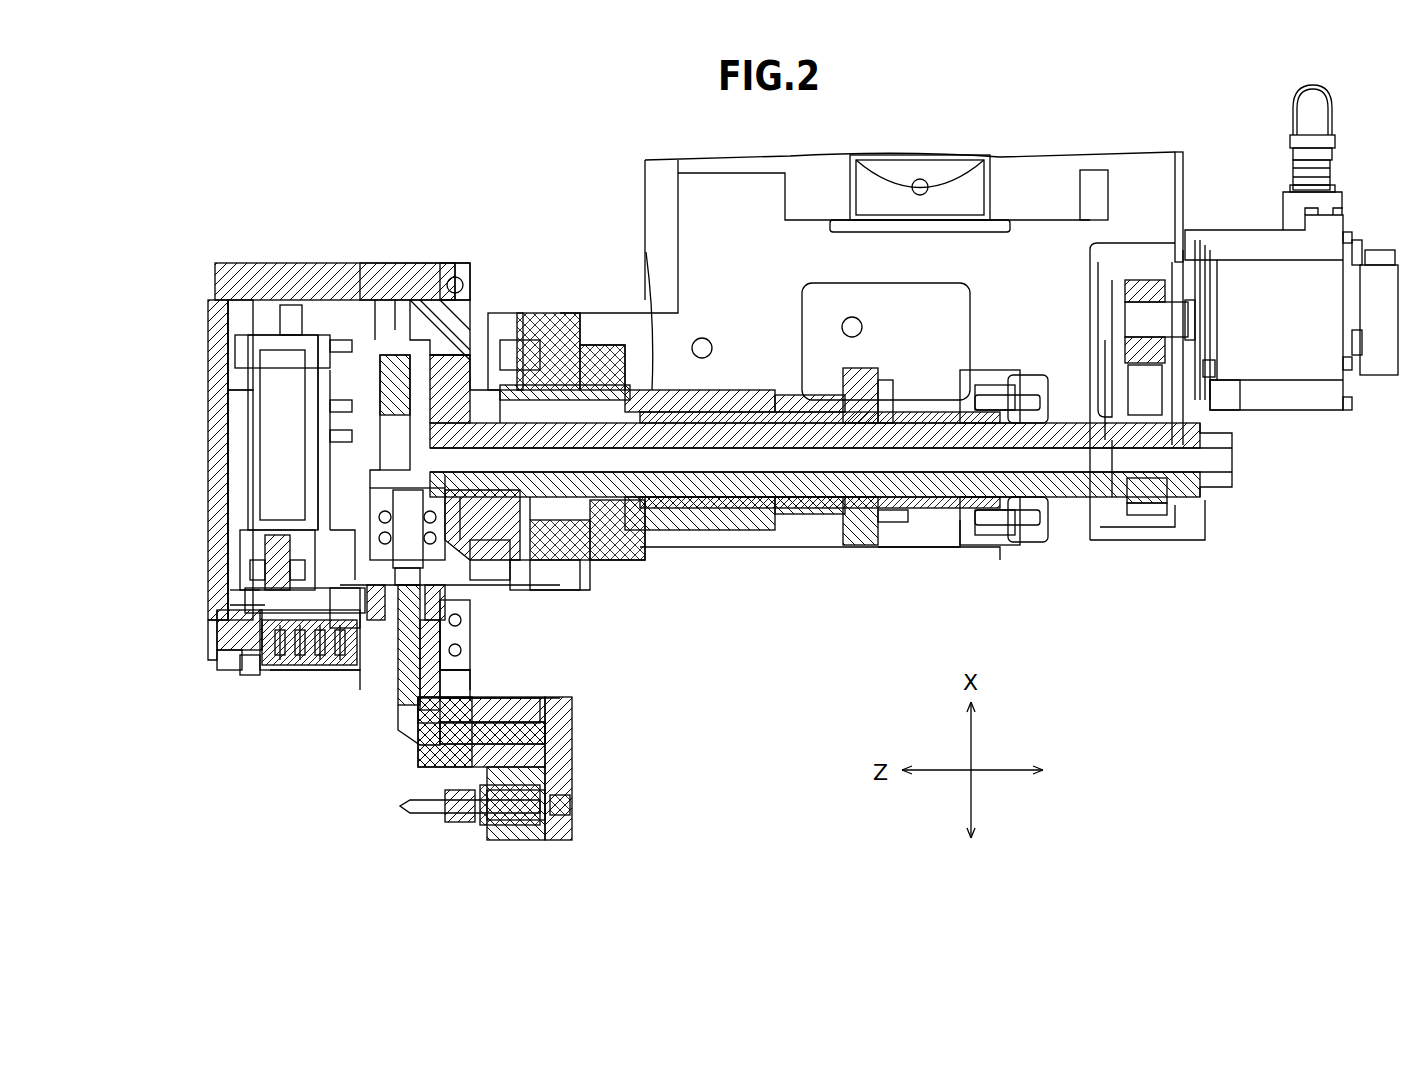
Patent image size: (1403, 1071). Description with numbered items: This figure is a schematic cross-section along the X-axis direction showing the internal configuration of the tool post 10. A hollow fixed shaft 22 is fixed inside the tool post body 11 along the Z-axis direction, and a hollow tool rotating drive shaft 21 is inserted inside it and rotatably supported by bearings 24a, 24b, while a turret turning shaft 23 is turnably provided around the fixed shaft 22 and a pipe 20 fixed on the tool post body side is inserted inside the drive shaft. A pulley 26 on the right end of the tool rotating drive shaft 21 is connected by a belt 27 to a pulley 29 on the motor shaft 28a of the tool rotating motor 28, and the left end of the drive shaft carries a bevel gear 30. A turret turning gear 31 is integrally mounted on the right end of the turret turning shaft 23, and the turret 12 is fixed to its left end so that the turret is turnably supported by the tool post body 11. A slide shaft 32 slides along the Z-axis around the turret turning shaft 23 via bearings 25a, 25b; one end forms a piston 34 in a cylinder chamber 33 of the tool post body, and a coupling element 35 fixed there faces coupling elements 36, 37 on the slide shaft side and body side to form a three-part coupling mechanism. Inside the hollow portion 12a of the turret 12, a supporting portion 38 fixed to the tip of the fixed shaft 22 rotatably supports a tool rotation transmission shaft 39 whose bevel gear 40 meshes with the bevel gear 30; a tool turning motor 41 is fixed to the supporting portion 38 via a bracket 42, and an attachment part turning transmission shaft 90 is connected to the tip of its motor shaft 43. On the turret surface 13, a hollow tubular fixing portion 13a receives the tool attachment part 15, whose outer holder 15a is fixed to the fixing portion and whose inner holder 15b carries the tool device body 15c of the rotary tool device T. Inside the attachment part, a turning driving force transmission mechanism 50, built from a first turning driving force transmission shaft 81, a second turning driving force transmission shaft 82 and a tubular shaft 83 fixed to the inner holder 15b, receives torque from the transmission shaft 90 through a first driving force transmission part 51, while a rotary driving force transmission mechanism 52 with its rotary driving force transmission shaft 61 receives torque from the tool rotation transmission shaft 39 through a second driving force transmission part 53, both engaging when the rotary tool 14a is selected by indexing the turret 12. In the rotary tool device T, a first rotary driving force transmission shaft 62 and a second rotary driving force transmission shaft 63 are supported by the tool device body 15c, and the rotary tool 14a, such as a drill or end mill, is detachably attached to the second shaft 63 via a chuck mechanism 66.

The tool post 10 is at (572, 260).
The tool post body 11 is at (600, 313).
The turret 12 is at (278, 262).
The hollow portion 12a is at (392, 335).
The turret surface 13 is at (240, 668).
The tubular fixing portion 13a is at (550, 635).
The rotary tool 14a is at (432, 813).
The tool attachment part 15 is at (290, 685).
The outer holder 15a is at (248, 672).
The inner holder 15b is at (470, 700).
The tool device body 15c is at (500, 712).
The pipe 20 is at (1232, 455).
The tool rotating drive shaft 21 is at (1070, 530).
The fixed shaft 22 is at (925, 548).
The turret turning shaft 23 is at (760, 530).
The bearing 24a is at (540, 540).
The bearing 24b is at (1050, 520).
The bearing 25a is at (650, 540).
The bearing 25b is at (820, 535).
The pulley 26 is at (1140, 540).
The belt 27 is at (1180, 395).
The tool rotating motor 28 is at (1290, 360).
The motor shaft 28a is at (1175, 330).
The pulley 29 is at (1180, 240).
The bevel gear 30 is at (436, 340).
The turret turning gear 31 is at (900, 530).
The slide shaft 32 is at (647, 309).
The cylinder chamber 33 is at (515, 380).
The piston 34 is at (598, 360).
The coupling element 35 is at (632, 565).
The coupling element 36 is at (470, 370).
The coupling element 37 is at (575, 560).
The supporting portion 38 is at (380, 390).
The tool rotation transmission shaft 39 is at (495, 570).
The bevel gear 40 is at (510, 540).
The tool turning motor 41 is at (270, 390).
The bracket 42 is at (345, 395).
The motor shaft 43 is at (255, 560).
The turning driving force transmission mechanism 50 is at (265, 675).
The first driving force transmission part 51 is at (262, 606).
The rotary driving force transmission mechanism 52 is at (400, 660).
The second driving force transmission part 53 is at (390, 580).
The rotary driving force transmission shaft 61 is at (400, 720).
The first rotary driving force transmission shaft 62 is at (545, 728).
The second rotary driving force transmission shaft 63 is at (560, 806).
The chuck mechanism 66 is at (452, 822).
The first turning driving force transmission shaft 81 is at (222, 660).
The second turning driving force transmission shaft 82 is at (335, 650).
The tubular shaft 83 is at (465, 600).
The attachment part turning transmission shaft 90 is at (258, 592).
The rotary tool device T is at (578, 760).